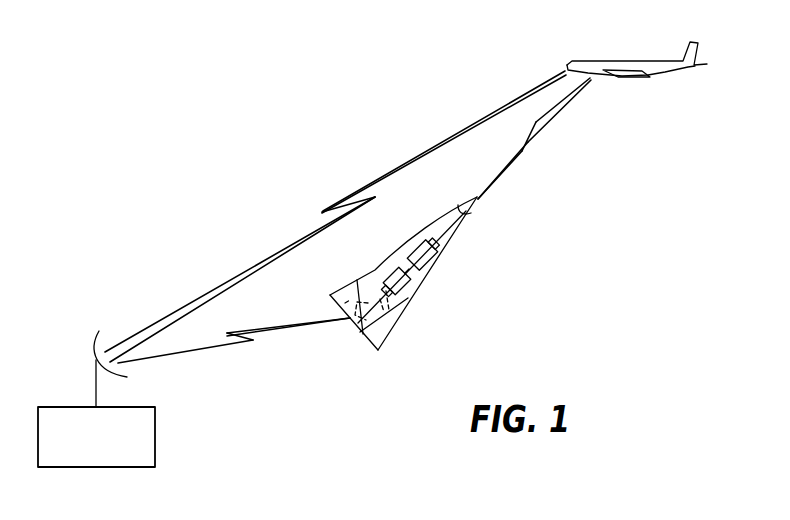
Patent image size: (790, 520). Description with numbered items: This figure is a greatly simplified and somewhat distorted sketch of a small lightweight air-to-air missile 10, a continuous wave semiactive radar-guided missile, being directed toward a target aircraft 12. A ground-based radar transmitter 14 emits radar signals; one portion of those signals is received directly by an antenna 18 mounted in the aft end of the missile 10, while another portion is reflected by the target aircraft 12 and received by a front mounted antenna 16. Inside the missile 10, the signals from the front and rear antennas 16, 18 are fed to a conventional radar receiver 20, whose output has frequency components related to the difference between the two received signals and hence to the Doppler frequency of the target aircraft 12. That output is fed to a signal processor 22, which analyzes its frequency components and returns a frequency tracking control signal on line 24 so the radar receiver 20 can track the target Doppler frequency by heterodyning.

The air-to-air missile 10 is at (467, 230).
The target aircraft 12 is at (615, 60).
The radar transmitter 14 is at (156, 438).
The front mounted antenna 16 is at (472, 212).
The antenna 18 is at (359, 318).
The radar receiver 20 is at (440, 253).
The signal processor 22 is at (402, 290).
The line 24 is at (420, 275).